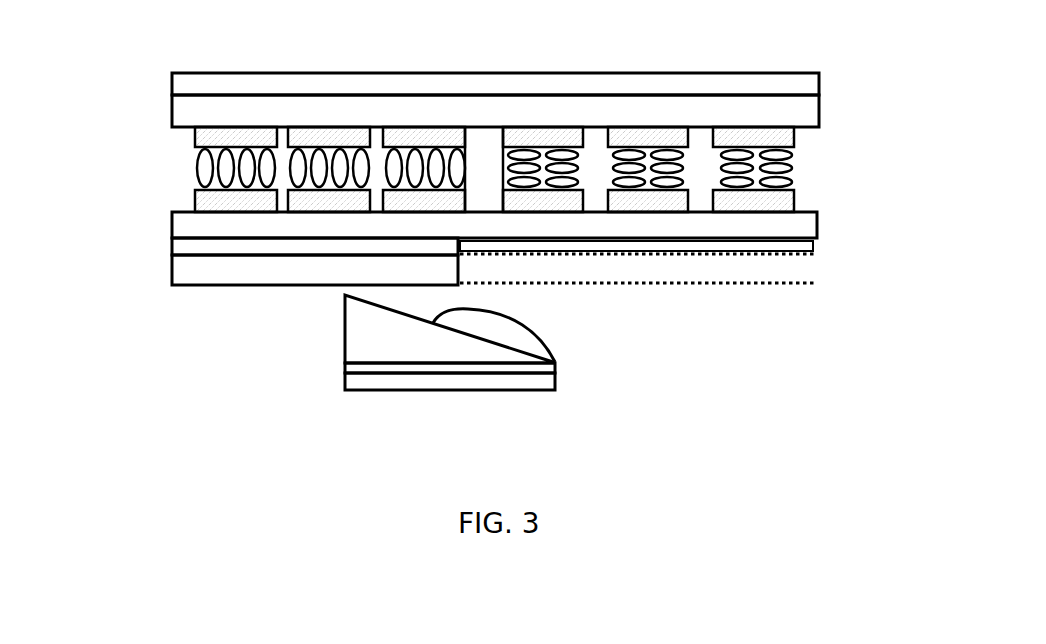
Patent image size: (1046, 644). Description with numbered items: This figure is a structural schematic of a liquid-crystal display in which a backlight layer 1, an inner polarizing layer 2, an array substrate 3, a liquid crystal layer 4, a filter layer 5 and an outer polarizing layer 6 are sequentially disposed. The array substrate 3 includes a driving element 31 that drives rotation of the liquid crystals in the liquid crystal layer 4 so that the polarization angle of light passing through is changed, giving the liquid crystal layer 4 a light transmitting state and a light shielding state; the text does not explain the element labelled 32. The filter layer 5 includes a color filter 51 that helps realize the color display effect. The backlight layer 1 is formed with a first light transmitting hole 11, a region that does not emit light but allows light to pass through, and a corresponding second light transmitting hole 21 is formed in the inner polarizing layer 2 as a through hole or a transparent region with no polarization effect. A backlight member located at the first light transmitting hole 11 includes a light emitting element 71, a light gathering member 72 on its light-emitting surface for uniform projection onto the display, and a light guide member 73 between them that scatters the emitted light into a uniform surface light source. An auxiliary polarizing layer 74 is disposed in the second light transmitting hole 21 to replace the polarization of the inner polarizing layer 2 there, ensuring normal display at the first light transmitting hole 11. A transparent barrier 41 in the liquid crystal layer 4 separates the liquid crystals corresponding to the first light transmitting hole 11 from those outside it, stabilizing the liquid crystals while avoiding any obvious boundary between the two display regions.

The backlight layer 1 is at (198, 278).
The inner polarizing layer 2 is at (183, 248).
The array substrate 3 is at (805, 232).
The liquid crystal layer 4 is at (790, 163).
The filter layer 5 is at (798, 110).
The outer polarizing layer 6 is at (798, 88).
The first light transmitting hole 11 is at (685, 275).
The second light transmitting hole 21 is at (580, 257).
The driving element 31 is at (758, 205).
The first electrode 32 is at (195, 203).
The transparent barrier 41 is at (478, 148).
The color filter 51 is at (333, 133).
The light emitting element 71 is at (383, 383).
The light gathering member 72 is at (367, 348).
The light guide member 73 is at (380, 370).
The auxiliary polarizing layer 74 is at (813, 253).